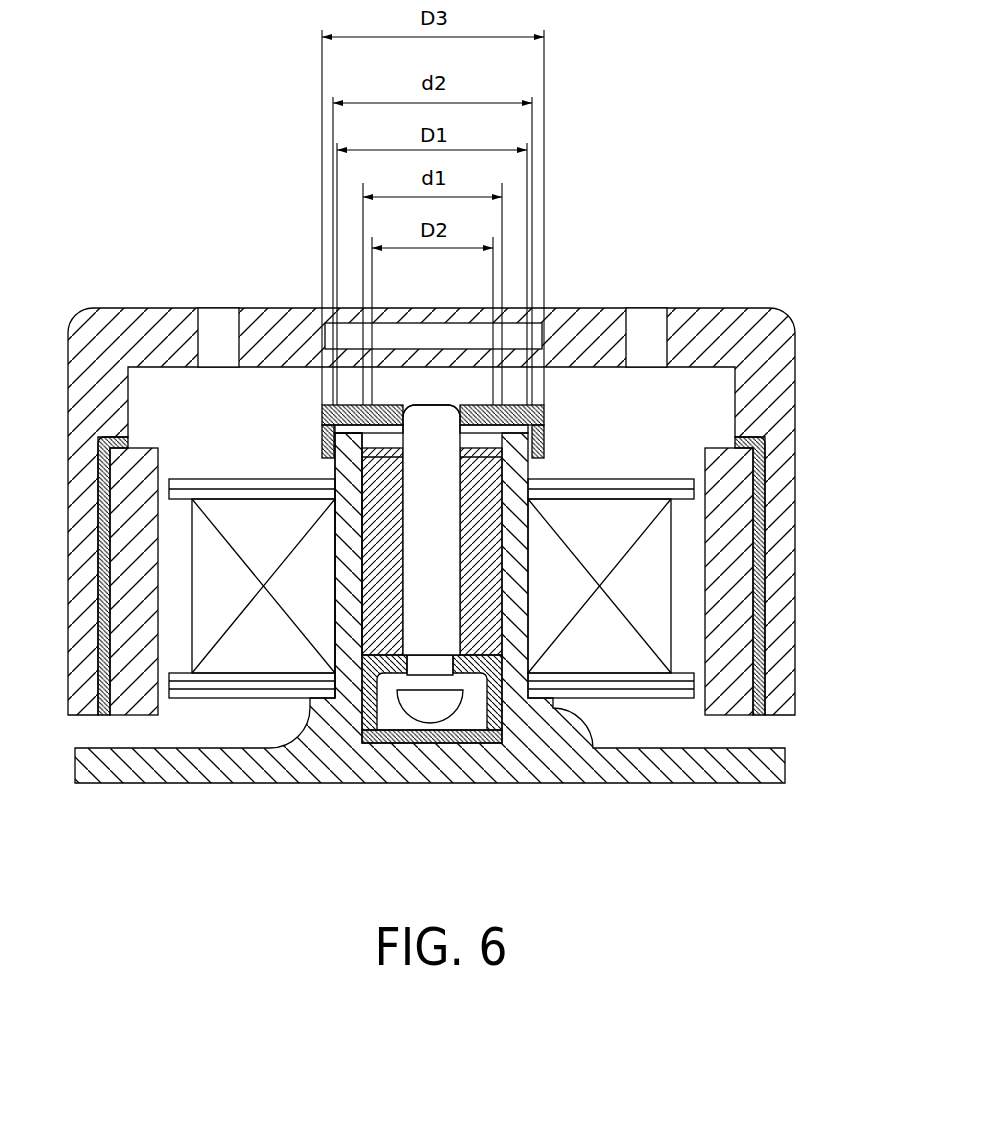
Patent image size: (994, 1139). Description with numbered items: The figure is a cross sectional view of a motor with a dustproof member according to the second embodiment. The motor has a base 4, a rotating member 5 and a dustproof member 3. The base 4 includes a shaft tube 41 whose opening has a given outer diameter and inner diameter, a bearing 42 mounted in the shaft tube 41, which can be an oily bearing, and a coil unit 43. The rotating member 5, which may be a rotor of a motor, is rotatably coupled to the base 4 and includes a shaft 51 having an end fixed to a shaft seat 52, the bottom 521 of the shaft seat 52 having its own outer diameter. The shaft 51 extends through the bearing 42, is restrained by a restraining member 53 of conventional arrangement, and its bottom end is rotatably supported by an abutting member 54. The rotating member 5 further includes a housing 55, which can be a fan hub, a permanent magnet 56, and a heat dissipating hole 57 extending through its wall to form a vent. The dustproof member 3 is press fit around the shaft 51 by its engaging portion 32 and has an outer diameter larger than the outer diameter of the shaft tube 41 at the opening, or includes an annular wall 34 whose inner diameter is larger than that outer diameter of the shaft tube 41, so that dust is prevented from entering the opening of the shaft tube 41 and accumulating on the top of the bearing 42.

The dustproof member 3 is at (475, 412).
The engaging portion 32 is at (458, 414).
The annular wall 34 is at (540, 447).
The base 4 is at (652, 768).
The shaft tube 41 is at (343, 588).
The bearing 42 is at (370, 628).
The coil unit 43 is at (195, 578).
The rotating member 5 is at (623, 298).
The shaft 51 is at (440, 527).
The shaft seat 52 is at (397, 366).
The bottom of the shaft seat 521 is at (400, 416).
The restraining member 53 is at (363, 708).
The abutting member 54 is at (472, 740).
The housing 55 is at (715, 308).
The permanent magnet 56 is at (735, 625).
The heat dissipating hole 57 is at (212, 318).